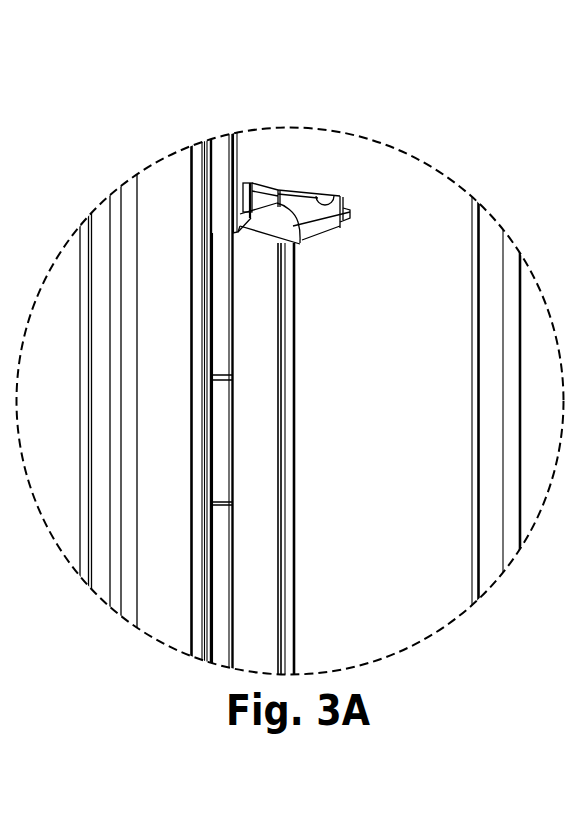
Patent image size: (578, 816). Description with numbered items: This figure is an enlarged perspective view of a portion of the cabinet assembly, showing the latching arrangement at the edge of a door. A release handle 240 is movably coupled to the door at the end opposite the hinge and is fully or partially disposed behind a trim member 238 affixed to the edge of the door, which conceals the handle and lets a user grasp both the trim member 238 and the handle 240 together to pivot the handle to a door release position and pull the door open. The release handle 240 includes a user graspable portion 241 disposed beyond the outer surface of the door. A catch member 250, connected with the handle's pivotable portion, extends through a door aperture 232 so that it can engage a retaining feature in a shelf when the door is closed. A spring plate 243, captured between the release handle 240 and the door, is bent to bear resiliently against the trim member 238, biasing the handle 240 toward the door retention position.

The trim member 238 is at (171, 203).
The release handle 240 is at (349, 481).
The user graspable portion 241 is at (296, 460).
The spring plate 243 is at (220, 433).
The catch member 250 is at (292, 210).
The door aperture 232 is at (337, 198).